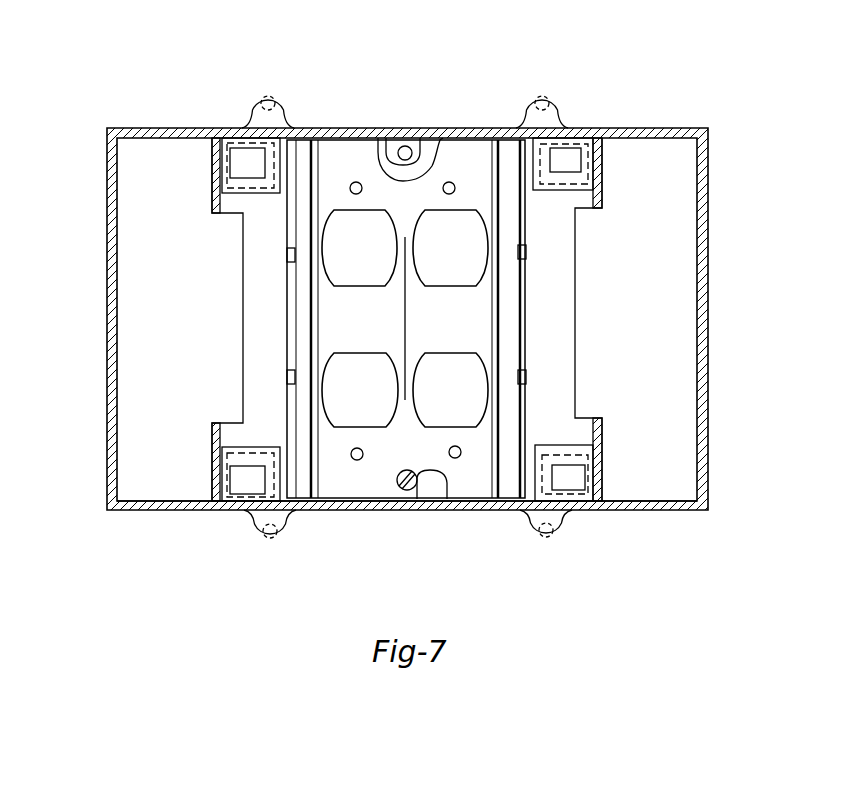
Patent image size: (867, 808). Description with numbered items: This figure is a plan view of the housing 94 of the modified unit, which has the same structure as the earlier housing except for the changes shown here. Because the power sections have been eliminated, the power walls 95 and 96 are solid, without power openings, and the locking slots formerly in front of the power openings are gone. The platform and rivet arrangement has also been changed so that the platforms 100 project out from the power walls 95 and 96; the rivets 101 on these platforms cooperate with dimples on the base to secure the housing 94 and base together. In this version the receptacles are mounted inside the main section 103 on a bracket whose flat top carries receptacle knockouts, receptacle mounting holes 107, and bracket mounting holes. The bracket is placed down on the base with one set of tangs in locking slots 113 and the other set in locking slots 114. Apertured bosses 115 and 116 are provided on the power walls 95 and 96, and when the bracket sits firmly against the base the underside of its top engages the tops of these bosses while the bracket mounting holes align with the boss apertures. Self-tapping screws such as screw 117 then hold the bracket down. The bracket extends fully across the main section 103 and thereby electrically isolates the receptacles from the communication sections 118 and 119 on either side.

The housing 94 is at (130, 519).
The power wall 95 is at (420, 178).
The power wall 96 is at (362, 511).
The platforms 100 is at (254, 542).
The rivets 101 is at (418, 416).
The main section 103 is at (262, 268).
The receptacle mounting holes 107 is at (354, 182).
The locking slots 113 is at (290, 253).
The locking slots 114 is at (530, 250).
The apertured boss 115 is at (386, 140).
The apertured boss 116 is at (410, 495).
The screw 117 is at (449, 496).
The communication section 118 is at (178, 320).
The communication section 119 is at (657, 292).